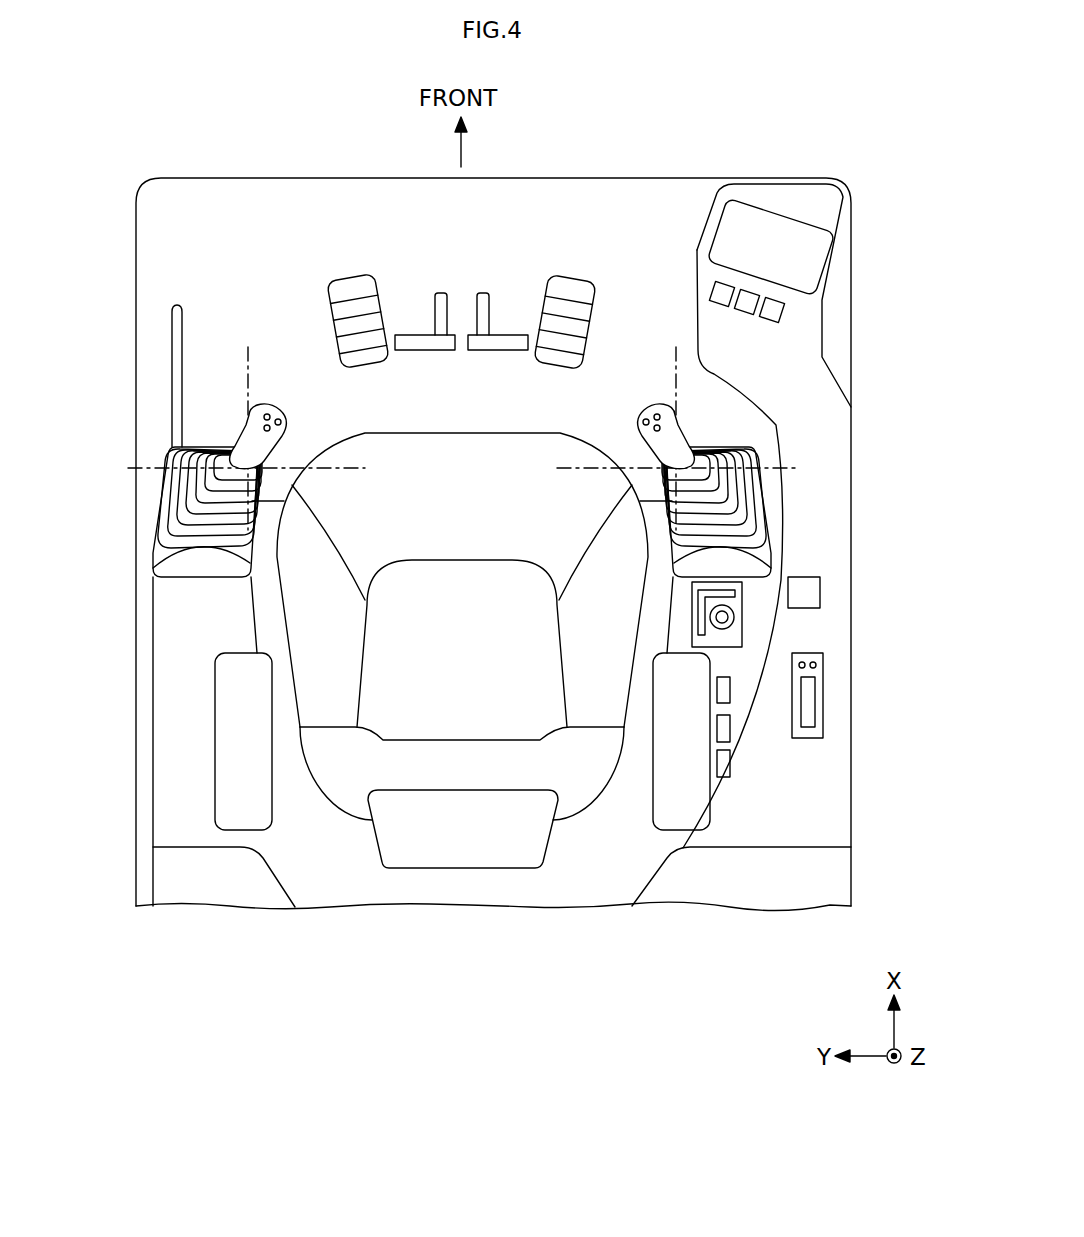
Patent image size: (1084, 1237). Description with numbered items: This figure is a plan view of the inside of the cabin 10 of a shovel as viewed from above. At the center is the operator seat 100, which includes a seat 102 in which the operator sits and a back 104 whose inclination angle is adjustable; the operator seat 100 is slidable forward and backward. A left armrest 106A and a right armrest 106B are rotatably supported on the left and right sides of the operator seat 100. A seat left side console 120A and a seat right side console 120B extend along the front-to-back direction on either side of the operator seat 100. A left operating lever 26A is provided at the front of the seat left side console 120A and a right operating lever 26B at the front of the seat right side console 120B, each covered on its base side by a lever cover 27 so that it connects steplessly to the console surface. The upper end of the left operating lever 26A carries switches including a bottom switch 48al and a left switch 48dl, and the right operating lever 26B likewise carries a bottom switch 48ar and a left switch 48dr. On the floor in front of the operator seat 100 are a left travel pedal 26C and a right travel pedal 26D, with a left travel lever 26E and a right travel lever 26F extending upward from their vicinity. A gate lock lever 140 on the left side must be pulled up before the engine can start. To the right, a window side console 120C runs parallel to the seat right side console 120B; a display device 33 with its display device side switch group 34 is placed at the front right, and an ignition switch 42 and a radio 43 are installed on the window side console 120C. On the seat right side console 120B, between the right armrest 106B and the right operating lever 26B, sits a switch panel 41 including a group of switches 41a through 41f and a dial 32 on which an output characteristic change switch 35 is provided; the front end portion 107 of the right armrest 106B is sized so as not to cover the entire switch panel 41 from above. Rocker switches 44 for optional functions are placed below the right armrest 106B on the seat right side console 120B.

The cabin 10 is at (505, 178).
The gate lock lever 140 is at (172, 332).
The seat left side console 120A is at (172, 695).
The seat right side console 120B is at (753, 700).
The window side console 120C is at (838, 548).
The lever cover 27 is at (205, 543).
The left operating lever 26A is at (311, 397).
The right operating lever 26B is at (610, 397).
The left travel pedal 26C is at (355, 277).
The right travel pedal 26D is at (568, 277).
The left travel lever 26E is at (442, 352).
The right travel lever 26F is at (482, 352).
The bottom switch 48al is at (328, 393).
The left switch 48dl is at (257, 413).
The bottom switch 48ar is at (593, 403).
The left switch 48dr is at (609, 416).
The display device 33 is at (780, 214).
The display device side switch group 34 is at (720, 305).
The switch panel 41 is at (641, 583).
The switch 41a is at (599, 577).
The switch 41f is at (705, 598).
The dial 32 is at (735, 618).
The ignition switch 42 is at (820, 588).
The radio 43 is at (823, 698).
The rocker switches 44 is at (760, 739).
The output characteristic change switch 35 is at (739, 683).
The front end portion 107 is at (680, 653).
The seat 102 is at (425, 697).
The operator seat 100 is at (463, 883).
The back 104 is at (577, 797).
The left armrest 106A is at (243, 815).
The right armrest 106B is at (681, 815).